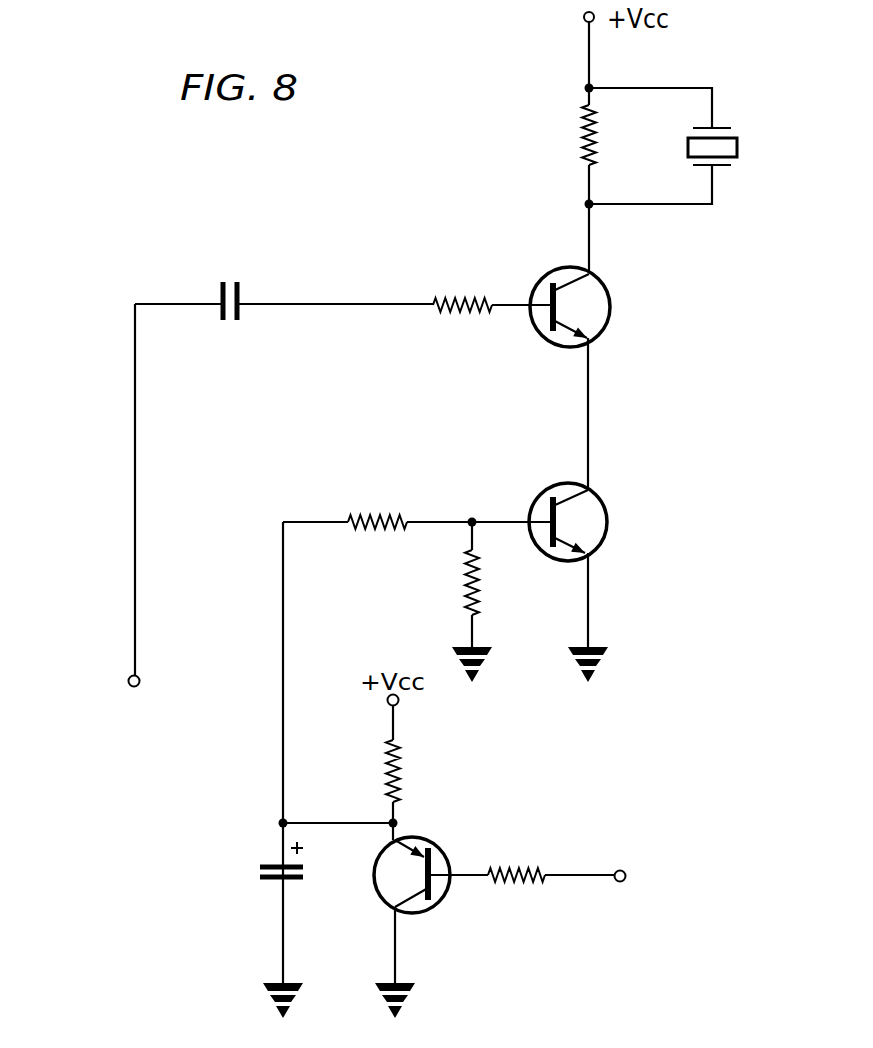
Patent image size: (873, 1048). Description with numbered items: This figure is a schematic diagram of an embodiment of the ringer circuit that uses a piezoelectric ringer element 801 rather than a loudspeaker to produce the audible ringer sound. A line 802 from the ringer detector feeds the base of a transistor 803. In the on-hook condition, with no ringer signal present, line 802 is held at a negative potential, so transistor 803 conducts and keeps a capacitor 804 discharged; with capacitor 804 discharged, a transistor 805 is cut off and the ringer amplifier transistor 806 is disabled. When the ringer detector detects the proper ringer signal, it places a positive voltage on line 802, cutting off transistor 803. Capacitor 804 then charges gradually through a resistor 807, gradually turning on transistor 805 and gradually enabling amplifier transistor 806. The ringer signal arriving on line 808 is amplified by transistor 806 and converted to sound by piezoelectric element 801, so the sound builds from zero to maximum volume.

The piezoelectric ringer element 801 is at (737, 146).
The line from the ringer detector 802 is at (590, 878).
The transistor 803 is at (415, 912).
The capacitor 804 is at (258, 878).
The transistor 805 is at (607, 520).
The ringer amplifier transistor 806 is at (611, 302).
The resistor 807 is at (403, 770).
The line carrying the ringer signal 808 is at (135, 510).